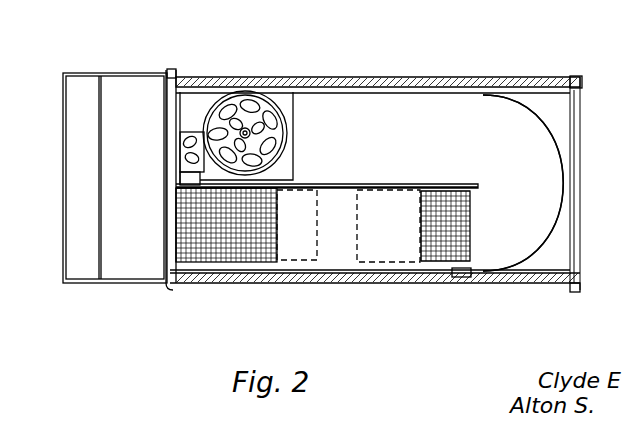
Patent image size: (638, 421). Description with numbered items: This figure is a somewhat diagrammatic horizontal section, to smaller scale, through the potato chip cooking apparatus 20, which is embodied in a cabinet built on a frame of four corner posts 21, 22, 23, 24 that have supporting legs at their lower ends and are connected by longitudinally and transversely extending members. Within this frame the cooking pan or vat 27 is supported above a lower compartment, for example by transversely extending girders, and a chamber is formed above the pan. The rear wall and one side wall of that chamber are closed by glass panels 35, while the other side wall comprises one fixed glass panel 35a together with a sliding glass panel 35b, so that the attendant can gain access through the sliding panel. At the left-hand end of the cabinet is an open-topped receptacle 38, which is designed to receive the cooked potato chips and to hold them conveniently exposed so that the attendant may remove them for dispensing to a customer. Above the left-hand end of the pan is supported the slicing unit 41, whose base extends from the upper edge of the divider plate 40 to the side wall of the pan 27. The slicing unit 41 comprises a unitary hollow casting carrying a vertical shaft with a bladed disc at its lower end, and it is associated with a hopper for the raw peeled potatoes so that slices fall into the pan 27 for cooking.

The apparatus 20 is at (494, 72).
The corner post 21 is at (173, 69).
The corner post 22 is at (173, 290).
The corner post 23 is at (581, 290).
The corner post 24 is at (583, 82).
The cooking pan 27 is at (545, 133).
The glass panels 35 is at (445, 80).
The fixed glass panel 35a is at (270, 276).
The sliding glass panel 35b is at (488, 284).
The open-topped receptacle 38 is at (136, 73).
The divider plate 40 is at (373, 184).
The slicing unit 41 is at (288, 92).